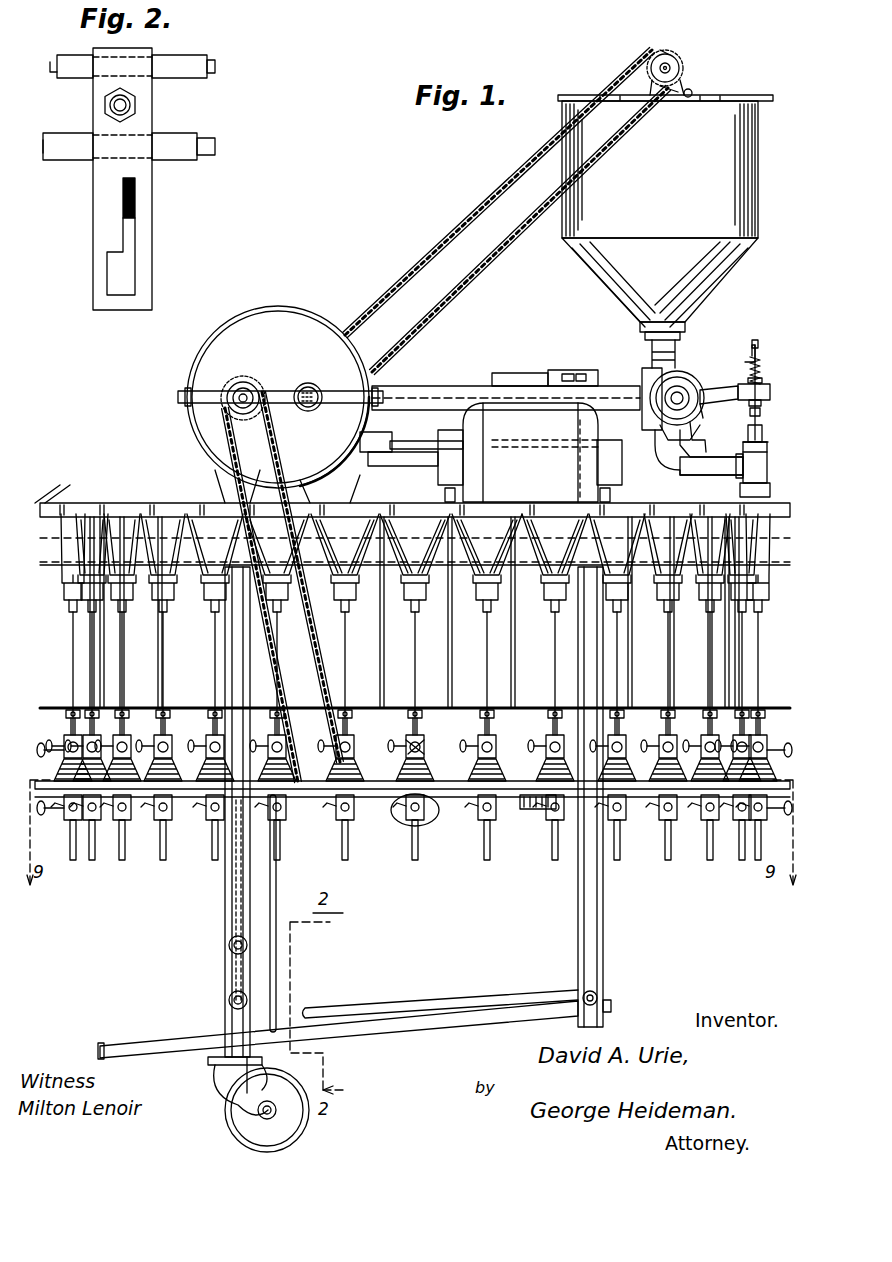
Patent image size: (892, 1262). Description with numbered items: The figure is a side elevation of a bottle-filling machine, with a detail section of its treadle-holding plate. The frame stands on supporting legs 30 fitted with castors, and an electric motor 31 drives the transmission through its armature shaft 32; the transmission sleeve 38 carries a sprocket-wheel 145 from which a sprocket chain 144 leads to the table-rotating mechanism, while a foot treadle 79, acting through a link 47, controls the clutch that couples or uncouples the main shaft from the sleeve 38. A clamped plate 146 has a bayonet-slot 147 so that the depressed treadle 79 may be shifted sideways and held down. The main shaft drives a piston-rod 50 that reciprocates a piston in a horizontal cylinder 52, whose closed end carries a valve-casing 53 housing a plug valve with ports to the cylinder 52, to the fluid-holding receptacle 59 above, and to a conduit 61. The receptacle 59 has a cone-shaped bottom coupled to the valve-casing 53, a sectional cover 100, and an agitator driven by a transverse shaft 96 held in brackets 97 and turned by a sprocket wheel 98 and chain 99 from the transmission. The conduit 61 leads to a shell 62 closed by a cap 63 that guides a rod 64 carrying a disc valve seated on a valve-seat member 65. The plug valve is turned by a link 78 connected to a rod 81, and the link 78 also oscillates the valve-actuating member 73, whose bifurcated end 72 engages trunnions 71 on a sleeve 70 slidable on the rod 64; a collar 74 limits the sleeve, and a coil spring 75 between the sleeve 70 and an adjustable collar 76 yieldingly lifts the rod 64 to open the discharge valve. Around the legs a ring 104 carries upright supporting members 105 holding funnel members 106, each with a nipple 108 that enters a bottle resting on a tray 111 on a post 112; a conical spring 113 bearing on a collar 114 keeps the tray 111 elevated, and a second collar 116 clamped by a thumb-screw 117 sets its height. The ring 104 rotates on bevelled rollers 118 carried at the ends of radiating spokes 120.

In FIG. 1, the standards or supporting legs 30 is at (605, 955).
In FIG. 1, the electric motor 31 is at (522, 420).
In FIG. 1, the armature shaft 32 is at (440, 470).
In FIG. 1, the sleeve 38 is at (232, 408).
In FIG. 1, the link 47 is at (278, 975).
In FIG. 1, the piston-rod 50 is at (426, 386).
In FIG. 1, the cylinder 52 is at (505, 373).
In FIG. 1, the valve-casing 53 is at (646, 384).
In FIG. 1, the fluid-holding receptacle 59 is at (760, 207).
In FIG. 1, the conduit 61 is at (712, 476).
In FIG. 1, the shell or casing 62 is at (768, 462).
In FIG. 1, the cap 63 is at (764, 430).
In FIG. 1, the rod 64 is at (756, 343).
In FIG. 1, the valve-seat member 65 is at (769, 492).
In FIG. 1, the sleeve 70 is at (762, 402).
In FIG. 1, the trunnions 71 is at (764, 381).
In FIG. 1, the bifurcated end 72 is at (710, 403).
In FIG. 1, the valve-actuating member 73 is at (716, 392).
In FIG. 1, the collar 74 is at (762, 411).
In FIG. 1, the coil spring 75 is at (763, 366).
In FIG. 1, the collar 76 is at (749, 358).
In FIG. 1, the link 78 is at (693, 430).
In FIG. 2, the foot treadle 79 is at (135, 216).
In FIG. 1, the foot treadle 79 is at (356, 1032).
In FIG. 1, the rod 81 is at (426, 441).
In FIG. 1, the shaft 96 is at (684, 64).
In FIG. 1, the brackets 97 is at (690, 86).
In FIG. 1, the sprocket wheel 98 is at (670, 50).
In FIG. 1, the chain 99 is at (480, 204).
In FIG. 1, the sectional cover or top 100 is at (747, 97).
In FIG. 1, the ring 104 is at (540, 790).
In FIG. 1, the rods or supporting members 105 is at (728, 660).
In FIG. 1, the funnel members 106 is at (425, 560).
In FIG. 1, the nipple 108 is at (410, 604).
In FIG. 1, the holding member or tray 111 is at (500, 736).
In FIG. 1, the post 112 is at (433, 758).
In FIG. 1, the conical spring 113 is at (478, 792).
In FIG. 1, the collar 114 is at (485, 743).
In FIG. 1, the second collar 116 is at (404, 822).
In FIG. 1, the thumb-screw 117 is at (340, 812).
In FIG. 1, the bevelled rollers 118 is at (703, 842).
In FIG. 1, the spokes or arms 120 is at (545, 810).
In FIG. 1, the sprocket chain 144 is at (233, 443).
In FIG. 1, the sprocket-wheel 145 is at (222, 390).
In FIG. 2, the plate 146 is at (152, 244).
In FIG. 1, the plate 146 is at (214, 1068).
In FIG. 2, the bayonet-slot 147 is at (130, 258).